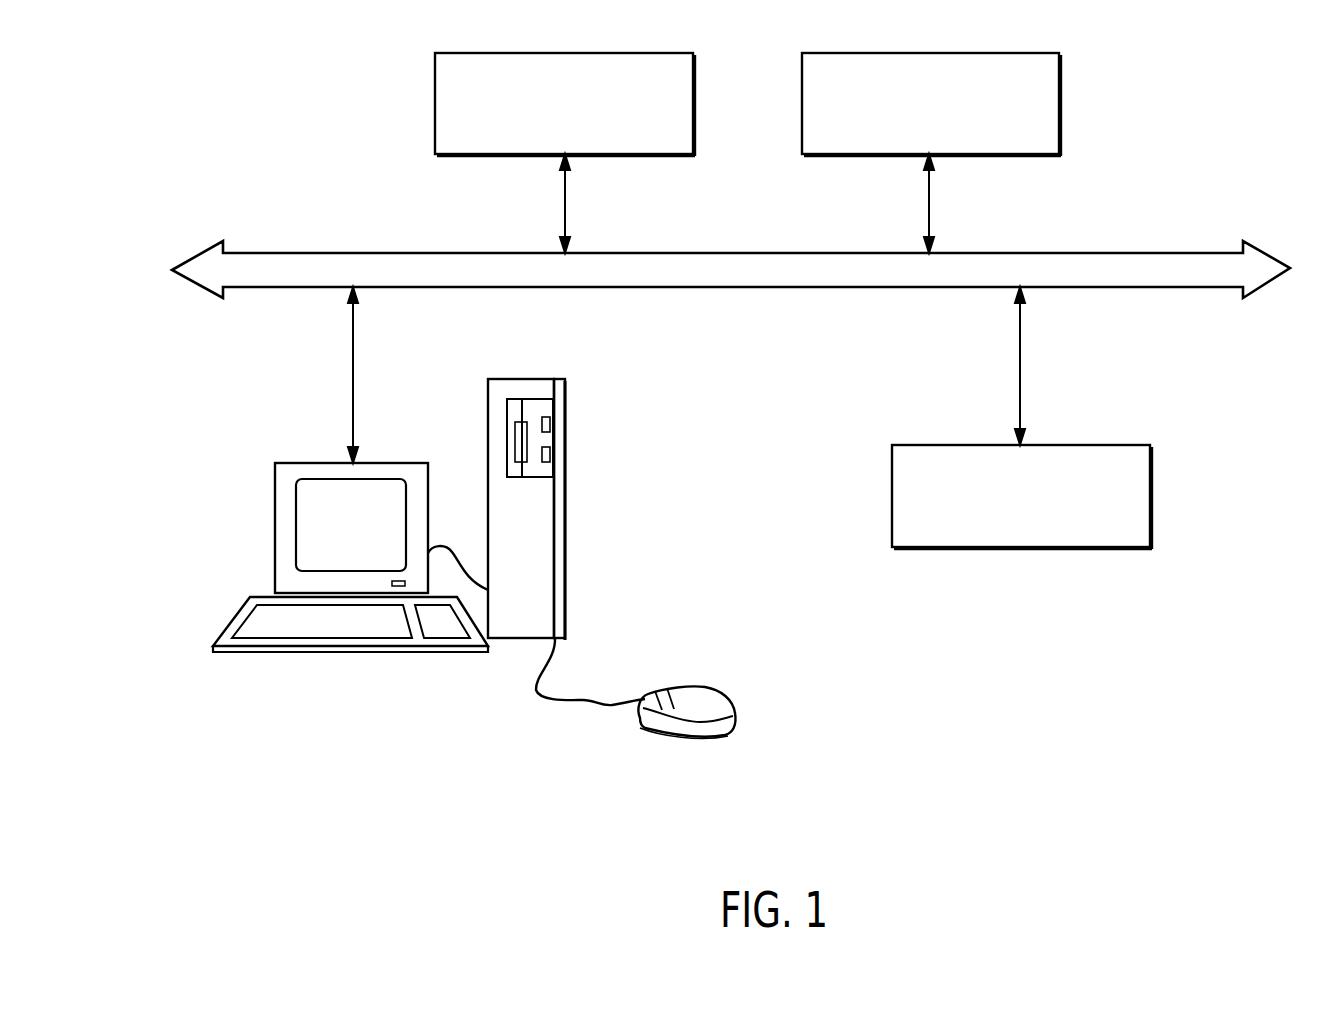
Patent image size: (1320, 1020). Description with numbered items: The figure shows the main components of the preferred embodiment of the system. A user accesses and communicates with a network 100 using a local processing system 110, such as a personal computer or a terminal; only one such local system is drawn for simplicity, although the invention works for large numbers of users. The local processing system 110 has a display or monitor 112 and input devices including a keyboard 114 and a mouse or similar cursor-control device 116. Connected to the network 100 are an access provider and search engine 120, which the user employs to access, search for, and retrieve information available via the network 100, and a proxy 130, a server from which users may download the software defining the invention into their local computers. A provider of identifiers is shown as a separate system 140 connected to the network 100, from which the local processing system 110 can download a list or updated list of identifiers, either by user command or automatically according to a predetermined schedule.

The network 100 is at (335, 253).
The local processing system 110 is at (454, 594).
The display or monitor 112 is at (307, 463).
The keyboard 114 is at (343, 653).
The cursor-control device 116 is at (685, 743).
The access provider and search engine 120 is at (1152, 497).
The proxy 130 is at (435, 80).
The provider of identifiers 140 is at (1063, 103).